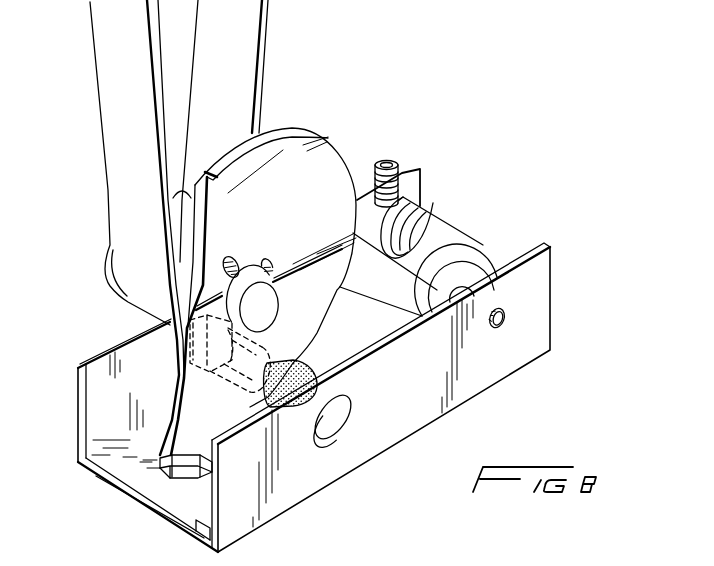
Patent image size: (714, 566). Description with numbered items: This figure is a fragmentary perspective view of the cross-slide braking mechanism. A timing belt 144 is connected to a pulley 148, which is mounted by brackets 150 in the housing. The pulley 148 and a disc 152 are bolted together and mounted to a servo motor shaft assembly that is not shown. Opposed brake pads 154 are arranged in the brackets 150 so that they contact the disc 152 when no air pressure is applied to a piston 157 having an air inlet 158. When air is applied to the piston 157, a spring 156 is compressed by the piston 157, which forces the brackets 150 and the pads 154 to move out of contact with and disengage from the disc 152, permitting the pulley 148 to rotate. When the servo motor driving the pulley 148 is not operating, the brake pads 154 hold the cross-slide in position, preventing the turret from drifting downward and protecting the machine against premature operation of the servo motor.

The timing belt 144 is at (260, 63).
The pulley 148 is at (110, 282).
The brackets 150 is at (161, 386).
The disc 152 is at (304, 124).
The brake pads 154 is at (268, 336).
The spring 156 is at (423, 210).
The piston 157 is at (506, 318).
The air inlet 158 is at (389, 158).